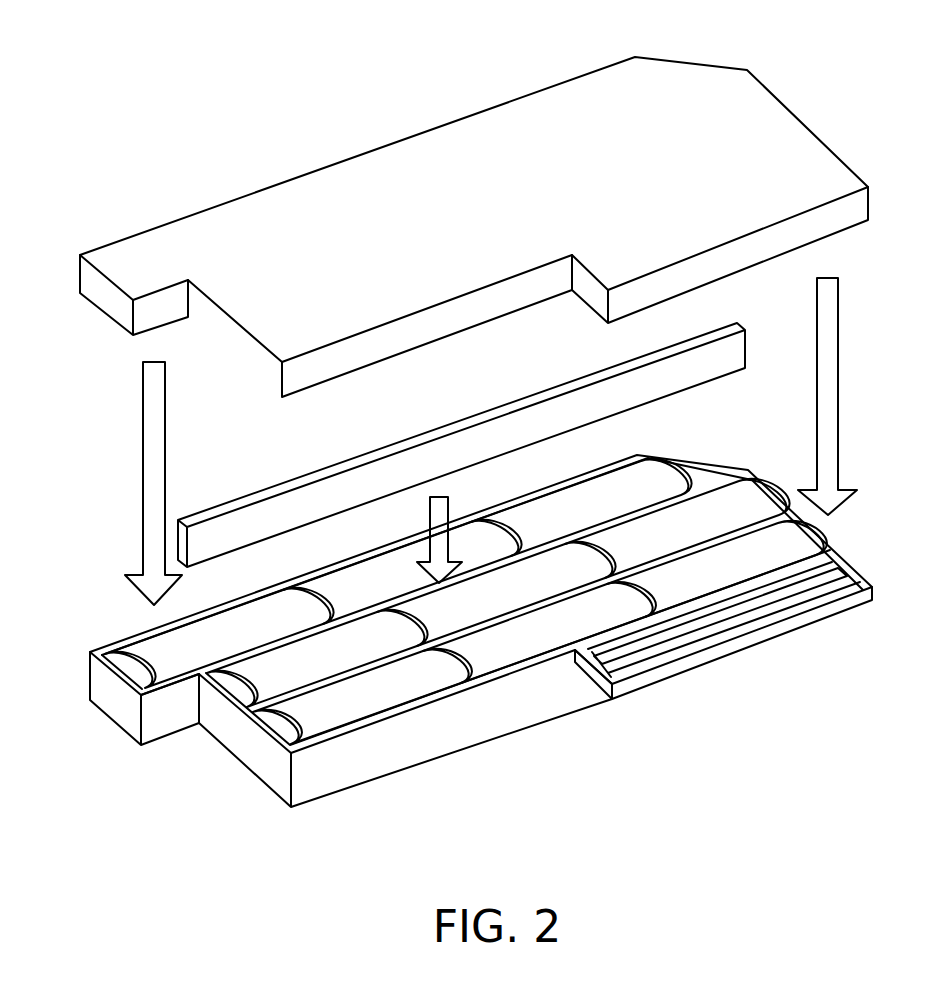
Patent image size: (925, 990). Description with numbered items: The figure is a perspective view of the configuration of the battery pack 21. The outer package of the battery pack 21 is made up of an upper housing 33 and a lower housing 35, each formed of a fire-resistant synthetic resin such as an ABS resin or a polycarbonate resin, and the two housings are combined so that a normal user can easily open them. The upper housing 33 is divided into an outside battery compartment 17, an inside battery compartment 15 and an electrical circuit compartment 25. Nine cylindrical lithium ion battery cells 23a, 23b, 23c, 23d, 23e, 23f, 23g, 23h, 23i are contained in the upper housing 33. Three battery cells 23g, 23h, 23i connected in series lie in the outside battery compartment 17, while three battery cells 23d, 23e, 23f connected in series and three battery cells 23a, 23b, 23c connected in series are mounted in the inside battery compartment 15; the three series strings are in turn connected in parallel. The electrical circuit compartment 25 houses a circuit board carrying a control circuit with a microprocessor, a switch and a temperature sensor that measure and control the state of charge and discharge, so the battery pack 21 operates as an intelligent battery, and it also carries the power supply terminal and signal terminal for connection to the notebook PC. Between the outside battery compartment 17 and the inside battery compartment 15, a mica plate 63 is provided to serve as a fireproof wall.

The inside battery compartment 15 is at (444, 631).
The outside battery compartment 17 is at (105, 682).
The battery pack 21 is at (465, 211).
The battery cell 23a is at (344, 701).
The battery cell 23b is at (513, 643).
The battery cell 23c is at (691, 578).
The battery cell 23d is at (309, 661).
The battery cell 23e is at (481, 603).
The battery cell 23f is at (650, 540).
The battery cell 23g is at (162, 661).
The battery cell 23h is at (343, 595).
The battery cell 23i is at (541, 521).
The electrical circuit compartment 25 is at (672, 642).
The upper housing 33 is at (80, 636).
The lower housing 35 is at (99, 282).
The mica plate 63 is at (375, 458).